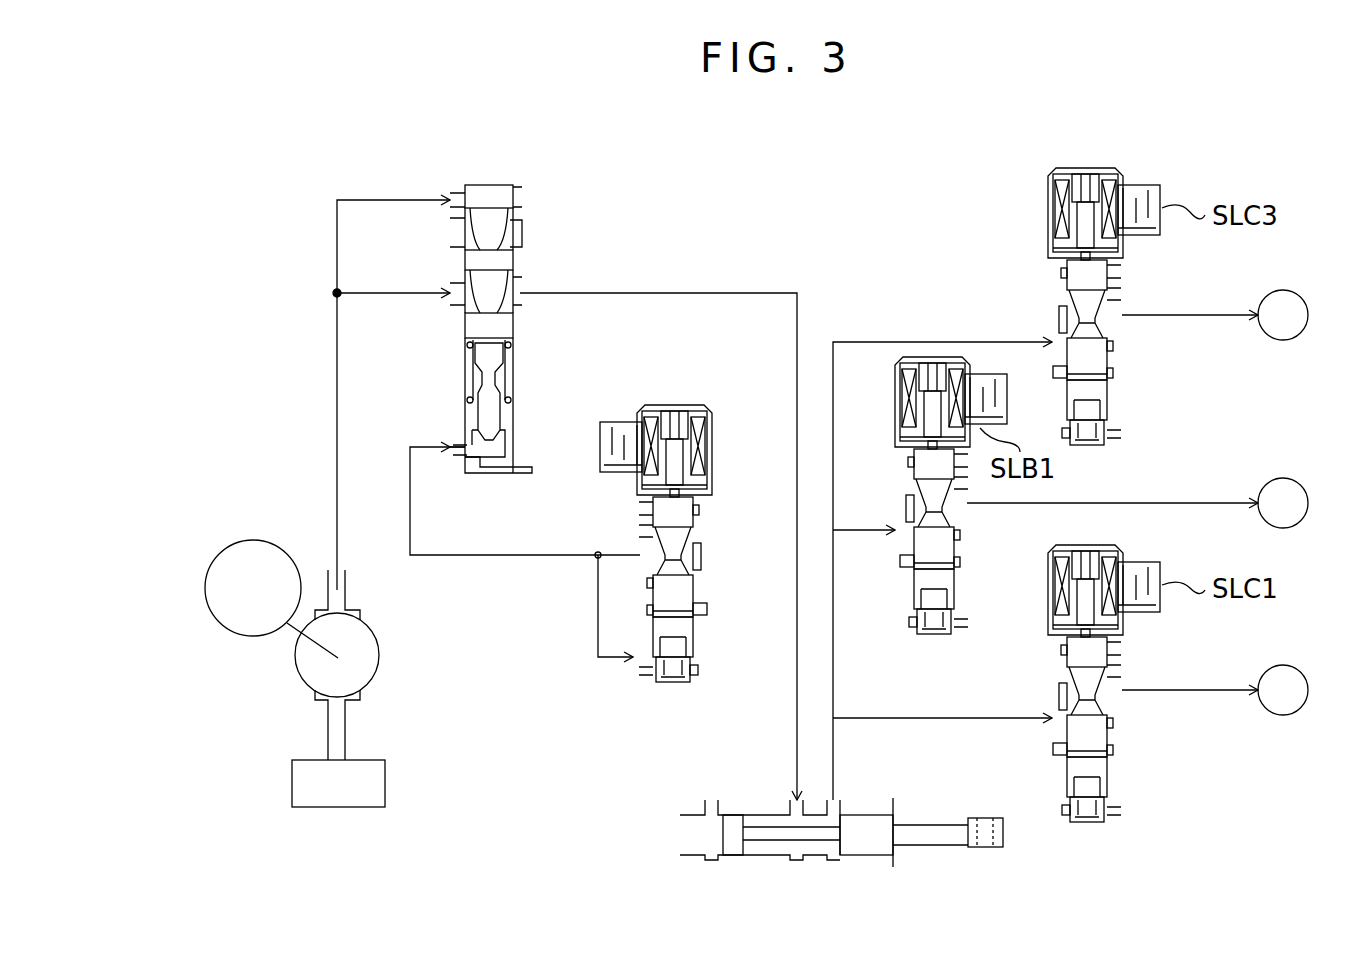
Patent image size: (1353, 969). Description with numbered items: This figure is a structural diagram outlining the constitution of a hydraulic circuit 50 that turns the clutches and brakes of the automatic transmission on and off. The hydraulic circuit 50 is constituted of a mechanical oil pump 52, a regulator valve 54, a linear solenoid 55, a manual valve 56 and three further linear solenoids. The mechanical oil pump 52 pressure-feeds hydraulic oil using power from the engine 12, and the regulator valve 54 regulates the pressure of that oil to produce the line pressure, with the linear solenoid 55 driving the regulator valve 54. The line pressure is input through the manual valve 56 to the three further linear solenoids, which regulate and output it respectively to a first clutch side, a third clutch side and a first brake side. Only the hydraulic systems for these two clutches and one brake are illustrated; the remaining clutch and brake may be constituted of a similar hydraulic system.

The hydraulic circuit 50 is at (404, 157).
The regulator valve 54 is at (513, 187).
The linear solenoid 55 is at (676, 405).
The manual valve 56 is at (867, 813).
The engine 12 is at (250, 538).
The mechanical oil pump 52 is at (380, 650).